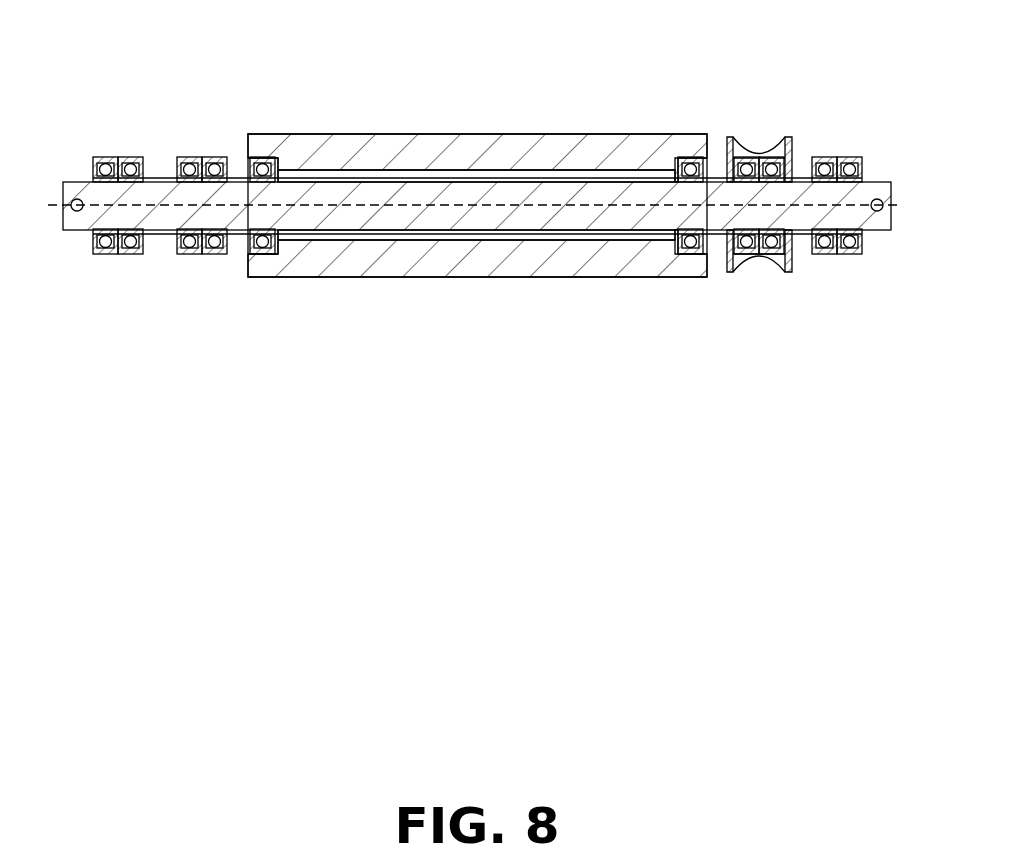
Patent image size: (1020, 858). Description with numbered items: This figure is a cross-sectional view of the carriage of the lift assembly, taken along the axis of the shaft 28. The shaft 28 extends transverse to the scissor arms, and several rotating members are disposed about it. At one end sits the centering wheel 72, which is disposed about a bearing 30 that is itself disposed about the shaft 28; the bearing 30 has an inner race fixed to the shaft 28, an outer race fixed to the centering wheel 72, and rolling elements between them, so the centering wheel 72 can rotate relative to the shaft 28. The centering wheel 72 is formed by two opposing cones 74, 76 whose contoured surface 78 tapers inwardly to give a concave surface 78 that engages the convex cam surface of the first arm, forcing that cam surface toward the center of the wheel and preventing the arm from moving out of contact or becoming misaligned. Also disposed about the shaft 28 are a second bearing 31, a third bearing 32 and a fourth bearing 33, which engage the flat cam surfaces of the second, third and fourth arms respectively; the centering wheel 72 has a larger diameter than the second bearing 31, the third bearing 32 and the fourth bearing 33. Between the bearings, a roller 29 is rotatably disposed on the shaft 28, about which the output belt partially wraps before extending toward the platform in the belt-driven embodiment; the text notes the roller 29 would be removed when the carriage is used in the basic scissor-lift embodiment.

The shaft 28 is at (492, 222).
The roller 29 is at (495, 155).
The bearing 30 is at (790, 256).
The second bearing 31 is at (838, 157).
The third bearing 32 is at (200, 157).
The fourth bearing 33 is at (118, 157).
The centering wheel 72 is at (803, 253).
The cone 74 is at (735, 272).
The cone 76 is at (790, 267).
The concave surface 78 is at (755, 152).